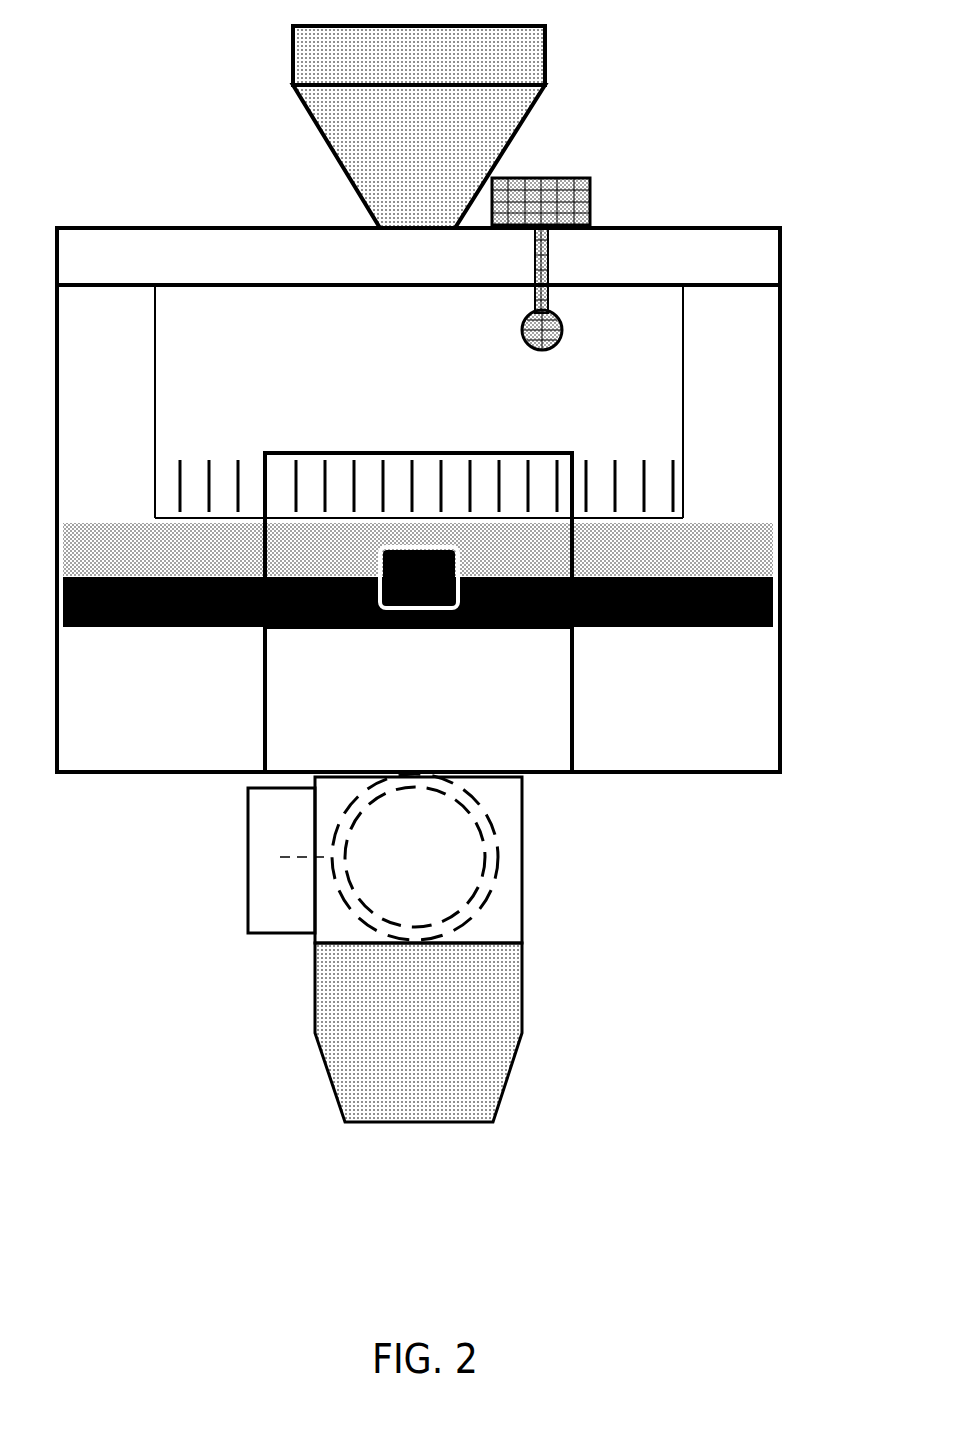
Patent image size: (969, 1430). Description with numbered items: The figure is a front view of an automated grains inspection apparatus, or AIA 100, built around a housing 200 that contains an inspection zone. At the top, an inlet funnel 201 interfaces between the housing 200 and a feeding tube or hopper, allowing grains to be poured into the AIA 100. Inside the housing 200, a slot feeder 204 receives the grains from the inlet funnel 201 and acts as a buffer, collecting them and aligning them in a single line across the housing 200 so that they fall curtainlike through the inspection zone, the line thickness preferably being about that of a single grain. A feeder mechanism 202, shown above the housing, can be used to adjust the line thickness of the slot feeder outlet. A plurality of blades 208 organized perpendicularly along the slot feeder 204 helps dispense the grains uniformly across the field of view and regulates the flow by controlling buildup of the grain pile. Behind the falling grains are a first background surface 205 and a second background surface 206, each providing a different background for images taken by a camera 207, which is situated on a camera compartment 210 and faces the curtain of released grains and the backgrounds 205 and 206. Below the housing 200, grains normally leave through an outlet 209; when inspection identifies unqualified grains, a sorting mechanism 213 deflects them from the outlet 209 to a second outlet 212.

The automated grains inspection apparatus (AIA) 100 is at (744, 101).
The housing 200 is at (782, 365).
The inlet funnel 201 is at (546, 68).
The feeder mechanism 202 is at (576, 178).
The slot feeder 204 is at (641, 428).
The first background surface 205 is at (755, 560).
The second background surface 206 is at (775, 608).
The camera 207 is at (455, 563).
The blades 208 is at (209, 460).
The outlet 209 is at (315, 1020).
The camera compartment 210 is at (432, 452).
The second outlet 212 is at (524, 843).
The sorting mechanism 213 is at (247, 925).